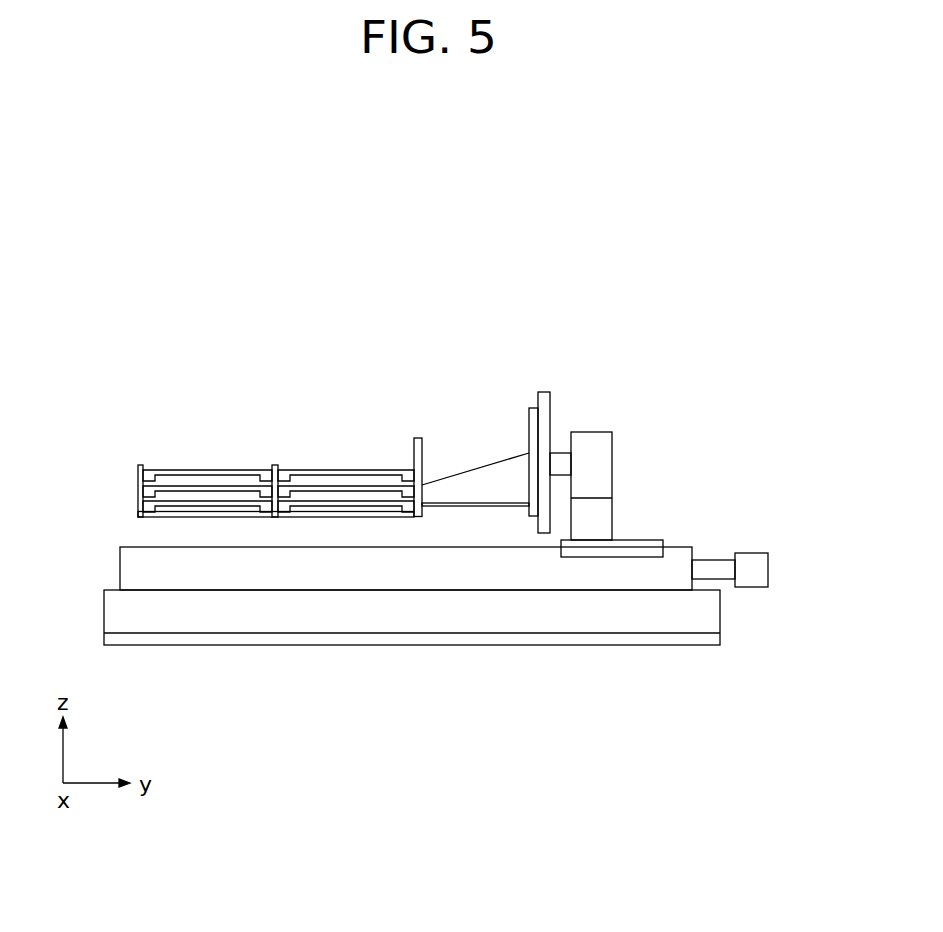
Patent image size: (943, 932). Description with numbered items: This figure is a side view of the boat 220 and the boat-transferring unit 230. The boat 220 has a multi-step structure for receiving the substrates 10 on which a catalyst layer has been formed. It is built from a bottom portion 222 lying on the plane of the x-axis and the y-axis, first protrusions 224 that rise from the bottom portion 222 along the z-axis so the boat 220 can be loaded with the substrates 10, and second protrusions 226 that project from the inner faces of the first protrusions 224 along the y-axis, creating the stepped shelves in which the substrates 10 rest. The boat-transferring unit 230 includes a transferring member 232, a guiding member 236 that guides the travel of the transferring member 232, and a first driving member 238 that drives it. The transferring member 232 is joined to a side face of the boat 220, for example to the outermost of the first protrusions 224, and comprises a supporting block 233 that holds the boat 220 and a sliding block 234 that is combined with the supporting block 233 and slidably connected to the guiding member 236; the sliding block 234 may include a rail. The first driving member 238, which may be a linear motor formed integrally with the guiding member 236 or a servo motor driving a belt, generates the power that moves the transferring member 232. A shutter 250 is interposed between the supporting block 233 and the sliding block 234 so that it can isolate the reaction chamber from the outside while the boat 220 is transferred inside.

The substrate 10 is at (339, 466).
The boat 220 is at (236, 463).
The bottom portion 222 is at (148, 515).
The first protrusions 224 is at (138, 468).
The second protrusions 226 is at (148, 490).
The boat-transferring unit 230 is at (628, 428).
The transferring member 232 is at (500, 410).
The supporting block 233 is at (417, 438).
The sliding block 234 is at (642, 545).
The guiding member 236 is at (370, 582).
The first driving member 238 is at (768, 566).
The shutter 250 is at (547, 392).